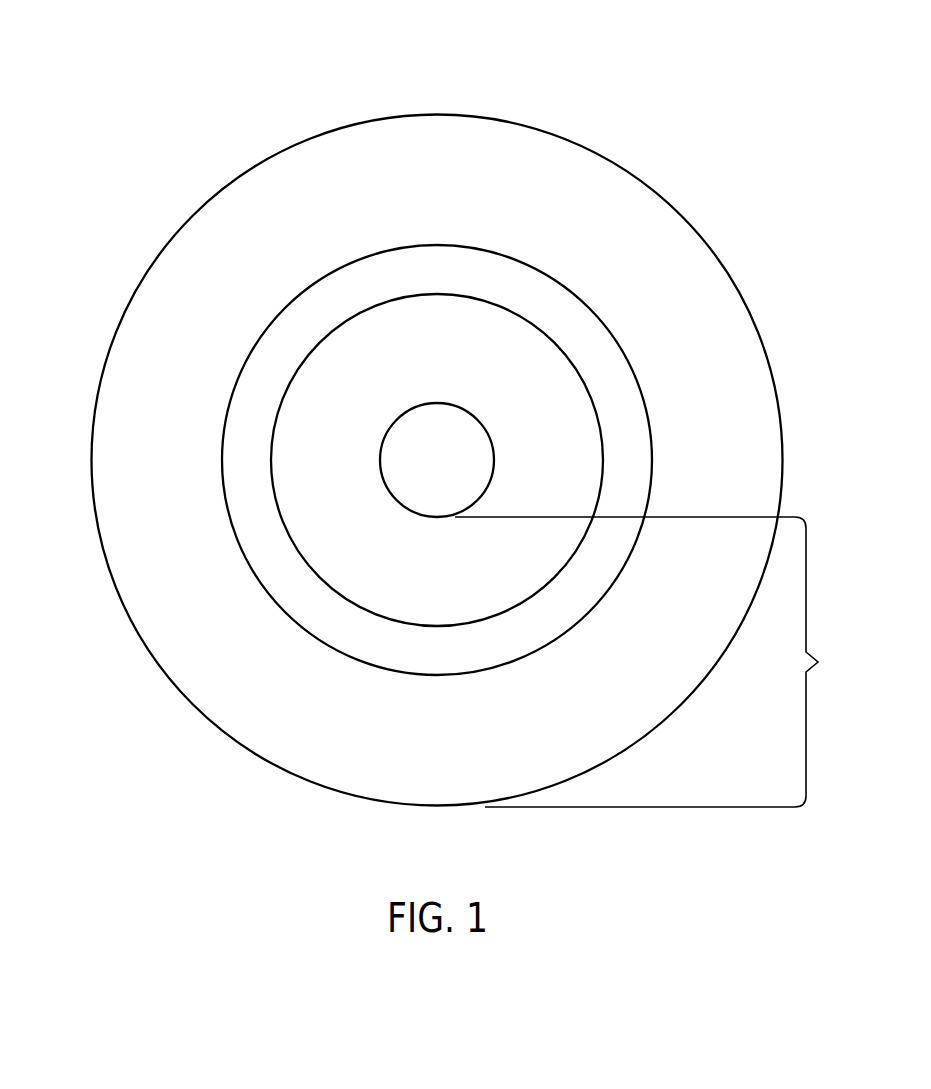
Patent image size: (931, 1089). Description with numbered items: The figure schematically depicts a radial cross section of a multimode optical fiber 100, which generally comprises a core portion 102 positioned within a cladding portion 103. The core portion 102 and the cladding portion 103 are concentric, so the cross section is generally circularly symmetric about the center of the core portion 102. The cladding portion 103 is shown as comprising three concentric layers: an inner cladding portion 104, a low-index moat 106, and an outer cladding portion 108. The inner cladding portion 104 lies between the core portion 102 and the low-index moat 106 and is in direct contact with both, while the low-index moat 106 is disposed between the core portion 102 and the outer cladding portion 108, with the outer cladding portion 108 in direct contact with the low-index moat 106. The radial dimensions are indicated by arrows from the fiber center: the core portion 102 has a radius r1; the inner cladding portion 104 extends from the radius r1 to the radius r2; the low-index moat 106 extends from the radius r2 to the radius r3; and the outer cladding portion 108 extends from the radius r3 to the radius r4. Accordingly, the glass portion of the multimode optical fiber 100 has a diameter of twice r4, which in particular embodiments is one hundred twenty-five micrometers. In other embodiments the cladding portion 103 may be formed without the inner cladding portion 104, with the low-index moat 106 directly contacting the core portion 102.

The multimode optical fiber 100 is at (145, 140).
The core portion 102 is at (397, 421).
The inner cladding portion 104 is at (271, 460).
The low-index moat 106 is at (248, 560).
The outer cladding portion 108 is at (95, 510).
The cladding portion 103 is at (662, 662).
The radius of the core portion r1 is at (437, 460).
The radius at outer boundary of the inner cladding portion r2 is at (437, 460).
The radius at outer boundary of the low-index moat r3 is at (437, 460).
The outer radius of the outer cladding portion r4 is at (437, 460).